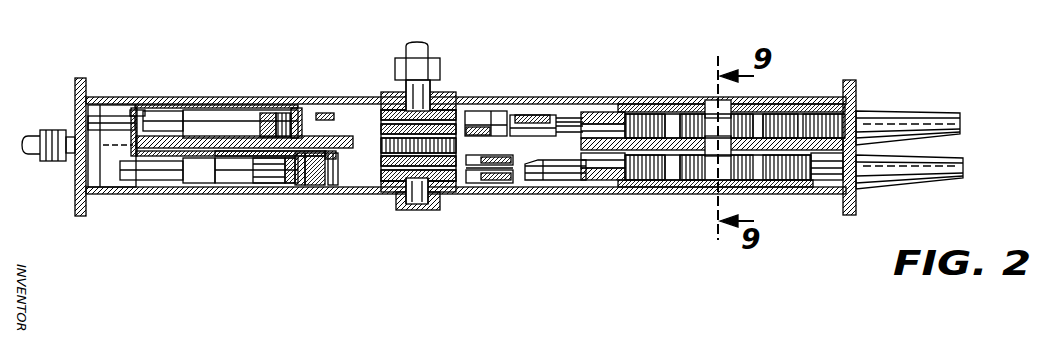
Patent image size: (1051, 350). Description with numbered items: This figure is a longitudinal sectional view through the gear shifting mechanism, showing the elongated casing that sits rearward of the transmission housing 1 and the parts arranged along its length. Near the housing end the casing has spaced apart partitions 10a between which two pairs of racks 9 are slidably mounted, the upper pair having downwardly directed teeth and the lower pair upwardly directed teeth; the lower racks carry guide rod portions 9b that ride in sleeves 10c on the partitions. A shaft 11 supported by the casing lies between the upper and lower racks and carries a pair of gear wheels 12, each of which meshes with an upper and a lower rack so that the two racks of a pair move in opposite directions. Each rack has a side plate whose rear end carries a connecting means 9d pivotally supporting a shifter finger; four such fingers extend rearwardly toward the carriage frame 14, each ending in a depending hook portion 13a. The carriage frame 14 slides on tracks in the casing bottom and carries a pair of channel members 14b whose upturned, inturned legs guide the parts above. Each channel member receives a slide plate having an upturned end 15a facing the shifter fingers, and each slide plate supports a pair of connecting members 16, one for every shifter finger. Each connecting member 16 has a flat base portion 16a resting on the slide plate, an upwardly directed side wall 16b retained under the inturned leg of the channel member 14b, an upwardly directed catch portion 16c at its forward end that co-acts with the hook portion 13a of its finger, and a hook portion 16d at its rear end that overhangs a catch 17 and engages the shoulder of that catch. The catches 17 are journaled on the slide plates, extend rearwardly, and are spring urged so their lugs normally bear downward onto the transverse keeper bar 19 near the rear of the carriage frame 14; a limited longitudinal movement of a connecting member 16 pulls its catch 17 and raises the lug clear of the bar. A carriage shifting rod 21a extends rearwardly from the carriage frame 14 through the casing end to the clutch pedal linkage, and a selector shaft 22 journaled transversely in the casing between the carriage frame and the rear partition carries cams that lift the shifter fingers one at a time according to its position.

The housing 1 is at (797, 110).
The racks 9 is at (810, 107).
The guide rod portions 9b is at (825, 163).
The connecting means 9d is at (645, 105).
The partitions 10a is at (850, 136).
The sleeves 10c is at (947, 150).
The shaft 11 is at (707, 177).
The gear wheels 12 is at (690, 128).
The hook portion 13a is at (285, 110).
The carriage frame 14 is at (87, 150).
The channel members 14b is at (245, 105).
The upturned end 15a is at (328, 183).
The connecting members 16 is at (205, 125).
The flat base portion 16a is at (263, 153).
The side wall 16b is at (223, 153).
The catch portion 16c is at (302, 102).
The hook portion 16d is at (150, 115).
The catches 17 is at (108, 110).
The keeper bar 19 is at (108, 145).
The carriage shifting rod 21a is at (24, 128).
The selector shaft 22 is at (411, 40).